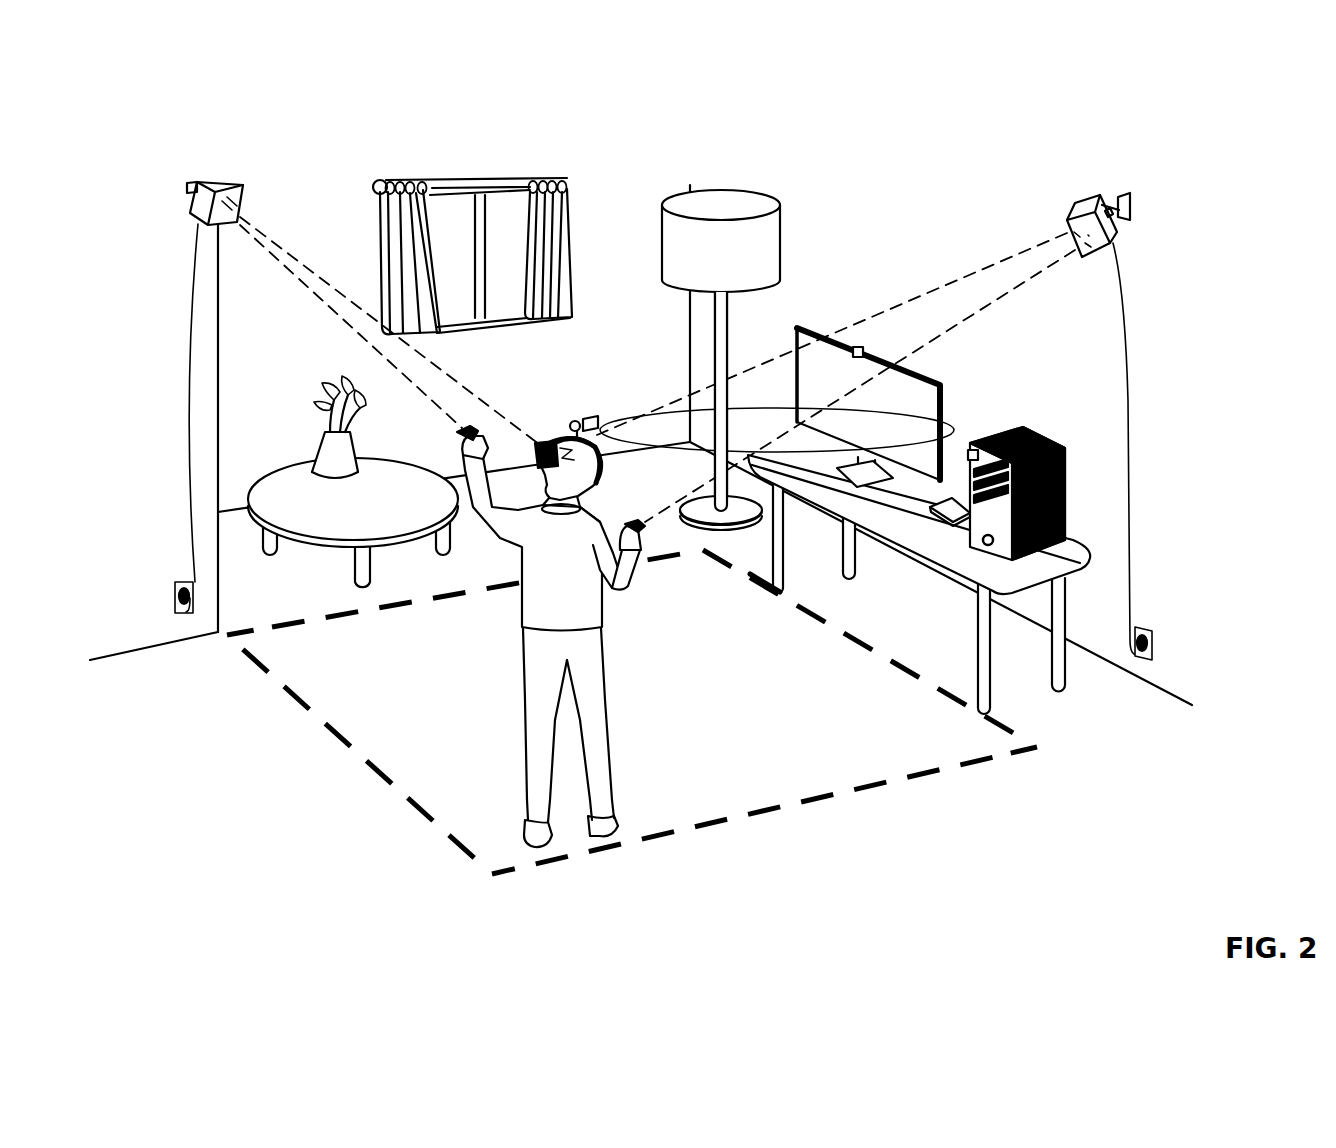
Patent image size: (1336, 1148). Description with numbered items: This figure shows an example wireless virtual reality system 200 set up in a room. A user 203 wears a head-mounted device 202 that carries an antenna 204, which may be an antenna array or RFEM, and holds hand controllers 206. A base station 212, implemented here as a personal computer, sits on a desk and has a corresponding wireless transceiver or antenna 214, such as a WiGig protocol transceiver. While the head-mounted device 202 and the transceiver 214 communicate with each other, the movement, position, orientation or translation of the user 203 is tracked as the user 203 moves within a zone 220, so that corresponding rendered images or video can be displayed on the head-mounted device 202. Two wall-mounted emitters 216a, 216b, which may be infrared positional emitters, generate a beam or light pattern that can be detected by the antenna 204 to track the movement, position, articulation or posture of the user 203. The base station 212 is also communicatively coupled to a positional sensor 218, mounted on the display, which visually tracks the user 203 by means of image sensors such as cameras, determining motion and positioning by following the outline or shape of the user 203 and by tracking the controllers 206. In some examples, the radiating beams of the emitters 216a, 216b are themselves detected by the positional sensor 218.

The wireless virtual reality system 200 is at (975, 75).
The head-mounted device 202 is at (590, 388).
The user 203 is at (540, 602).
The antenna 204 is at (573, 424).
The controllers 206 is at (458, 432).
The base station 212 is at (1040, 436).
The wireless transceiver 214 is at (974, 450).
The emitter 216a is at (200, 210).
The emitter 216b is at (1100, 196).
The positional sensor 218 is at (858, 347).
The zone 220 is at (632, 712).